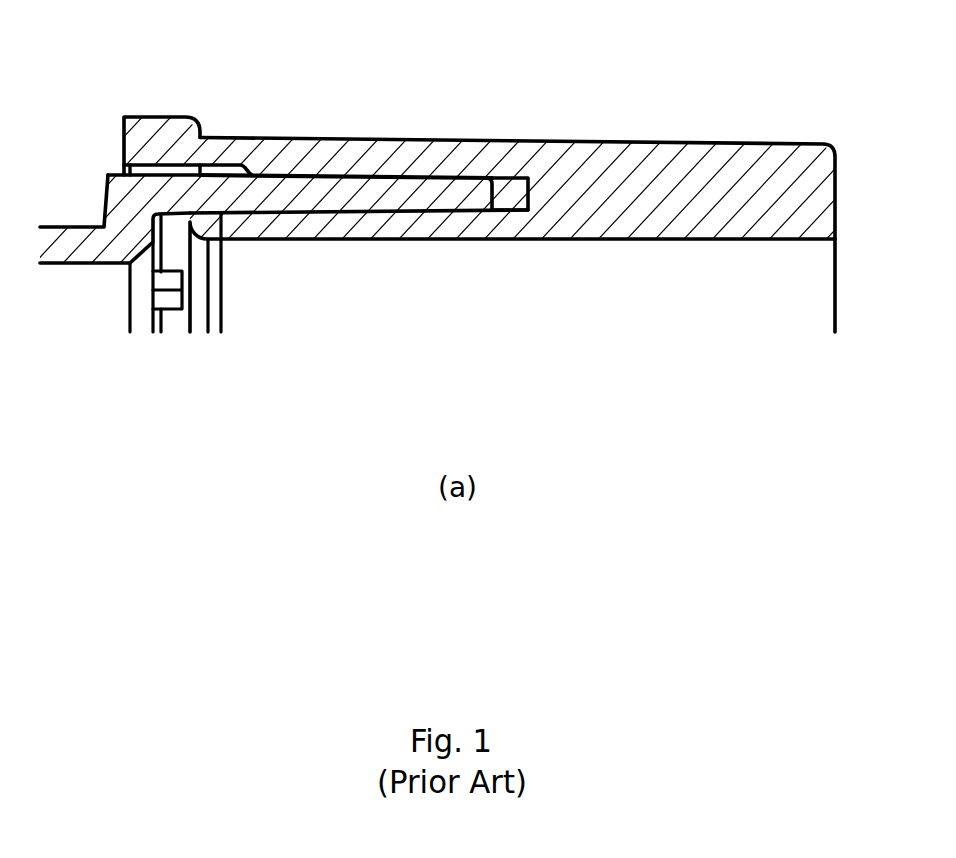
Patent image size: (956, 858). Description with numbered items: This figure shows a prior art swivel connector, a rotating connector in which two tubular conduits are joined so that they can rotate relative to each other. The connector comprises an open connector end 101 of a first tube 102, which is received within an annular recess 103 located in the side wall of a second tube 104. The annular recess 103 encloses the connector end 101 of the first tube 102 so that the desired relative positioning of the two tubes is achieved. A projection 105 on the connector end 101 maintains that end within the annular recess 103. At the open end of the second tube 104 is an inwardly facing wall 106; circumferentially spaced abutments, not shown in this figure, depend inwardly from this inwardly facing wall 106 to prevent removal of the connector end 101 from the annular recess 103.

The open connector end 101 is at (440, 197).
The first tube 102 is at (73, 245).
The annular recess 103 is at (518, 195).
The second tube 104 is at (708, 173).
The projection 105 is at (240, 170).
The inwardly facing wall 106 is at (150, 160).